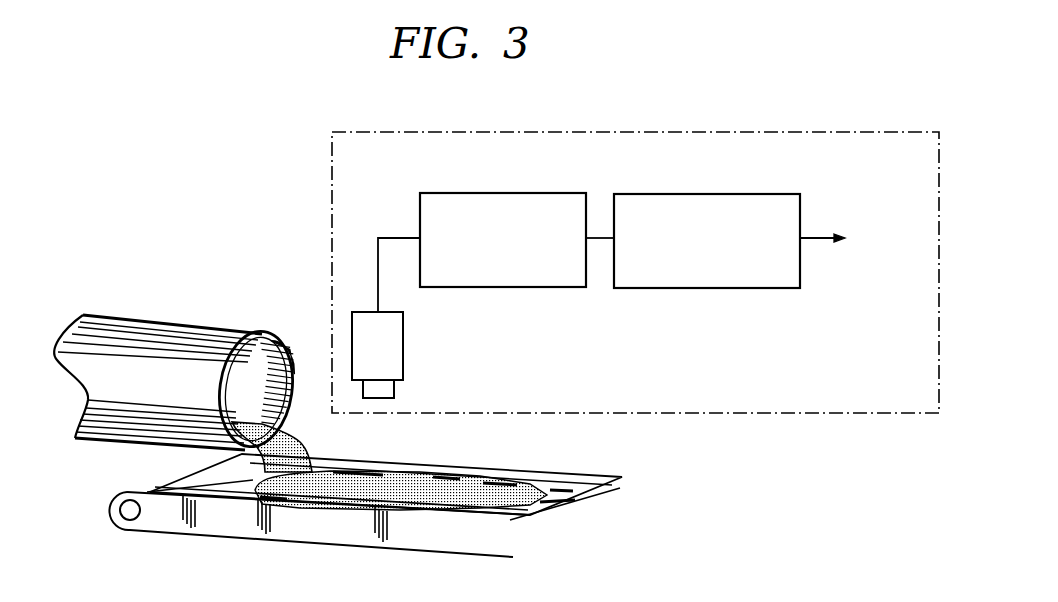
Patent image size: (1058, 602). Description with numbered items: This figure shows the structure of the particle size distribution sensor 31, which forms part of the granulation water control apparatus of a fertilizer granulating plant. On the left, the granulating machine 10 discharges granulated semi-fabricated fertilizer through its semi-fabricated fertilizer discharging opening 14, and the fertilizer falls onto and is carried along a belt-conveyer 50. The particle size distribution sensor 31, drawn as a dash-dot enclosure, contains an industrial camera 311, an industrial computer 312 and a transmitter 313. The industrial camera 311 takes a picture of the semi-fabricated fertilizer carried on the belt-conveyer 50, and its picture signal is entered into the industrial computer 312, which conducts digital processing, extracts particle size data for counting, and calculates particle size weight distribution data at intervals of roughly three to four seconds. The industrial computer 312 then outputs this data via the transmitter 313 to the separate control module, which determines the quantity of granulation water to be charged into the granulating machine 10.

The granulating machine 10 is at (165, 305).
The semi-fabricated fertilizer discharging opening 14 is at (253, 393).
The particle size distribution sensor 31 is at (332, 192).
The industrial camera 311 is at (385, 350).
The industrial computer 312 is at (468, 192).
The transmitter 313 is at (692, 199).
The belt-conveyer 50 is at (558, 457).